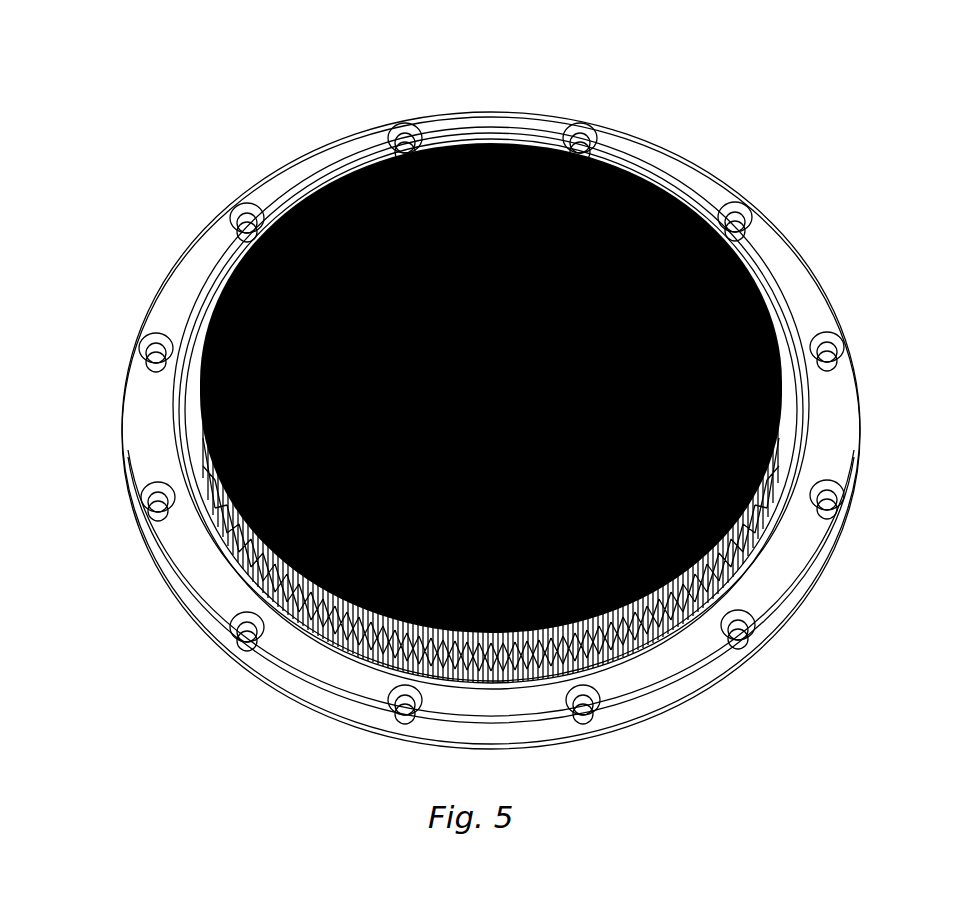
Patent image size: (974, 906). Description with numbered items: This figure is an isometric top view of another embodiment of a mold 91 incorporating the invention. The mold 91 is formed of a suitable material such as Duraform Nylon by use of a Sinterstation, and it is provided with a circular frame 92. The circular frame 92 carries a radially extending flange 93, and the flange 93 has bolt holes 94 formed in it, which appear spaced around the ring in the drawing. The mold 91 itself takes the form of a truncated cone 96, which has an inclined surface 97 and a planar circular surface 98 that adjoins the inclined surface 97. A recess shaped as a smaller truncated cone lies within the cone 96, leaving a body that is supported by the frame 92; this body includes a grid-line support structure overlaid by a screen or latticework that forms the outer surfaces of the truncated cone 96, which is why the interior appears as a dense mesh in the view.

The mold 91 is at (792, 126).
The circular frame 92 is at (760, 558).
The radially extending flange 93 is at (843, 467).
The bolt holes 94 is at (833, 356).
The truncated cone 96 is at (727, 232).
The inclined surface 97 is at (768, 297).
The planar circular surface 98 is at (543, 153).